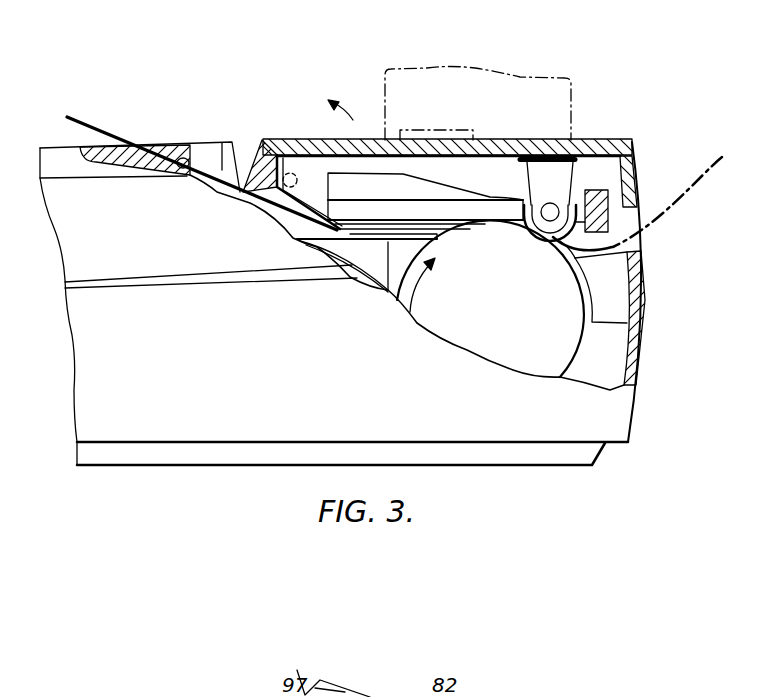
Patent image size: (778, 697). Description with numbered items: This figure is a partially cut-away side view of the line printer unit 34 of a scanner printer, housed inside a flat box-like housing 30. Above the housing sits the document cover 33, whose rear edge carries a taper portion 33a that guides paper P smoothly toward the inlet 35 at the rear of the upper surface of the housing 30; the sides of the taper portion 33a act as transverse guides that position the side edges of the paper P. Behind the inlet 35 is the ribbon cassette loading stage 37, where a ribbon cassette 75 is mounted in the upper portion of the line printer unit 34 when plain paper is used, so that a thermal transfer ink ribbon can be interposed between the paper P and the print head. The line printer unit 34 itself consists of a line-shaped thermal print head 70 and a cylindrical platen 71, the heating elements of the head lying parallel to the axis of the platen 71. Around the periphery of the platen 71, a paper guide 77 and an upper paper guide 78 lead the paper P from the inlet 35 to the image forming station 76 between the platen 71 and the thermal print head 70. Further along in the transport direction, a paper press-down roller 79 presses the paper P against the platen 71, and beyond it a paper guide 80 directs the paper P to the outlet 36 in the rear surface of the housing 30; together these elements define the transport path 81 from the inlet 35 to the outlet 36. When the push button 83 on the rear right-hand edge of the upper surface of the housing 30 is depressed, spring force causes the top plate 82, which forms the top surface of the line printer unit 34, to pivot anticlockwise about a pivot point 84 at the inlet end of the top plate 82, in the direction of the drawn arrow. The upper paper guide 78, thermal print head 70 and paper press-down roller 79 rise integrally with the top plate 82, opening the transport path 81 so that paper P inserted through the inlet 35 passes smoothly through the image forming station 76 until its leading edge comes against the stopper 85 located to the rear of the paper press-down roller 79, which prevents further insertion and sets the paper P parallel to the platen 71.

The housing 30 is at (615, 405).
The document cover 33 is at (58, 152).
The taper portion 33a is at (173, 172).
The paper P is at (93, 127).
The line printer unit 34 is at (600, 345).
The inlet 35 is at (263, 177).
The outlet 36 is at (631, 224).
The ribbon cassette loading stage 37 is at (506, 65).
The thermal print head 70 is at (463, 210).
The platen 71 is at (535, 353).
The ribbon cassette 75 is at (461, 90).
The image forming station 76 is at (490, 222).
The paper guide 77 is at (383, 248).
The upper paper guide 78 is at (357, 229).
The paper press-down roller 79 is at (579, 175).
The paper guide 80 is at (613, 293).
The transport path 81 is at (562, 253).
The top plate 82 is at (552, 147).
The push button 83 is at (428, 130).
The pivot point 84 is at (288, 172).
The stopper 85 is at (598, 190).